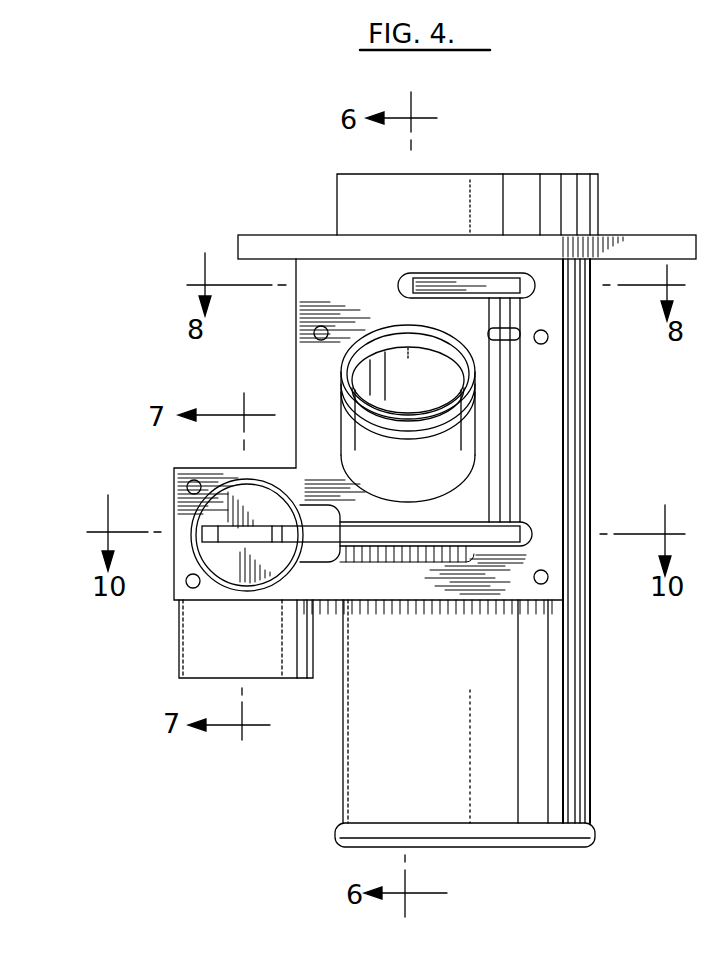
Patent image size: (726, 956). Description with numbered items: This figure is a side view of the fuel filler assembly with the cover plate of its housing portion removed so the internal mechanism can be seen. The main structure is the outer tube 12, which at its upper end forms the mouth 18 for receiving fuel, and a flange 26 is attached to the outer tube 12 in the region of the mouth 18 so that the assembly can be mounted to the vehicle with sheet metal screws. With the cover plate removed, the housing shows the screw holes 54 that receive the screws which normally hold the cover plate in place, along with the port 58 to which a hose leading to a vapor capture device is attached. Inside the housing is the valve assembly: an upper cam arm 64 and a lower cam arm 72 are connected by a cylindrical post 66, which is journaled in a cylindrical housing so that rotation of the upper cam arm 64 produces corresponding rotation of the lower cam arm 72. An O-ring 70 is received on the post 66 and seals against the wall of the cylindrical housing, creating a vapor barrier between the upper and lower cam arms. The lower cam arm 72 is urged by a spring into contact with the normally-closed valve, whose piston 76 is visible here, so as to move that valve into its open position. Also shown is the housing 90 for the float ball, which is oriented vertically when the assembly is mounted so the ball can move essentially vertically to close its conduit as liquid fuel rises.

The outer tube 12 is at (563, 744).
The mouth 18 is at (548, 170).
The flange 26 is at (651, 246).
The screw holes 54 is at (546, 583).
The port 58 is at (284, 656).
The upper cam arm 64 is at (441, 290).
The cylindrical post 66 is at (510, 445).
The O-ring 70 is at (521, 340).
The lower cam arm 72 is at (410, 535).
The piston 76 is at (238, 567).
The housing 90 is at (418, 478).